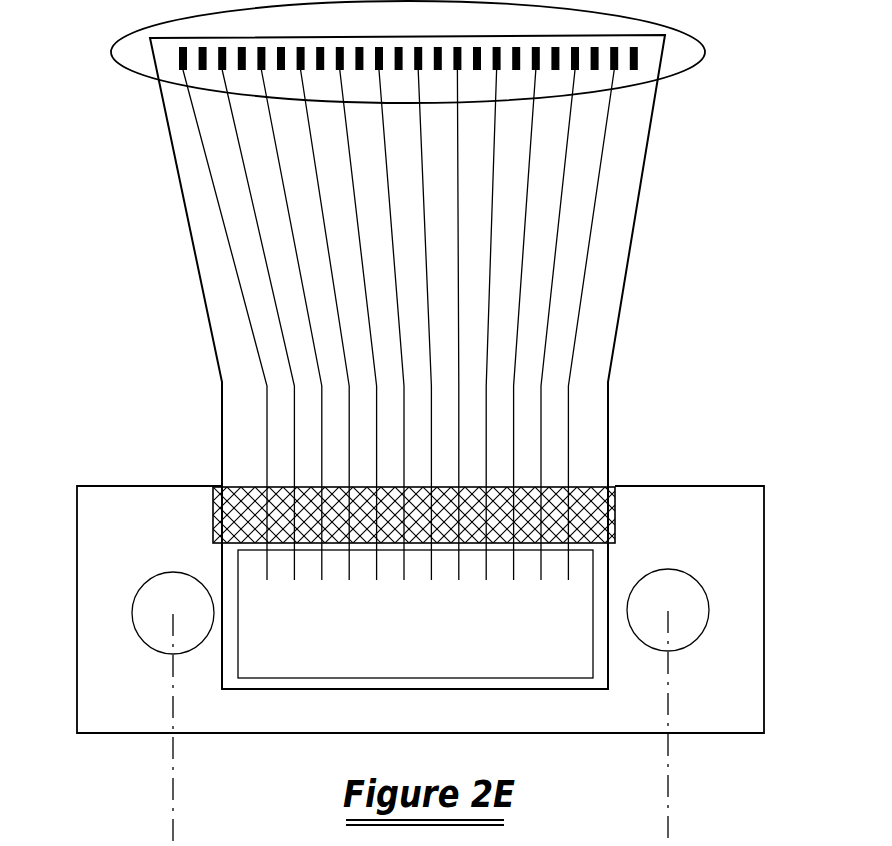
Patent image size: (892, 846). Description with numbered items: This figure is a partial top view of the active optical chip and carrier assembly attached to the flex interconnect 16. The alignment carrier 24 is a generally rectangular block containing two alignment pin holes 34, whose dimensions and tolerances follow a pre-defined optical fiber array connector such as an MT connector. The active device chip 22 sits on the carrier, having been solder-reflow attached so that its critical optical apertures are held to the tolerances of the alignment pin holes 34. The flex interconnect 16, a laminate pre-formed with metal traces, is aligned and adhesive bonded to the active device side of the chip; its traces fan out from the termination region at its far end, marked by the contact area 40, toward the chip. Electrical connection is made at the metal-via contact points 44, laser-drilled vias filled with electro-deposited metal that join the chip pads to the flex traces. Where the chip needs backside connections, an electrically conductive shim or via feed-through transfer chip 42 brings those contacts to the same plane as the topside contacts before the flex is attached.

The flex interconnect 16 is at (630, 263).
The contact pads at cable end 40 is at (680, 68).
The metal-via contact points 44 is at (268, 580).
The electrically conductive shim or via feed-through transfer chip 42 is at (616, 510).
The alignment carrier 24 is at (765, 558).
The active device chip 22 is at (580, 657).
The alignment pin holes 34 is at (142, 640).